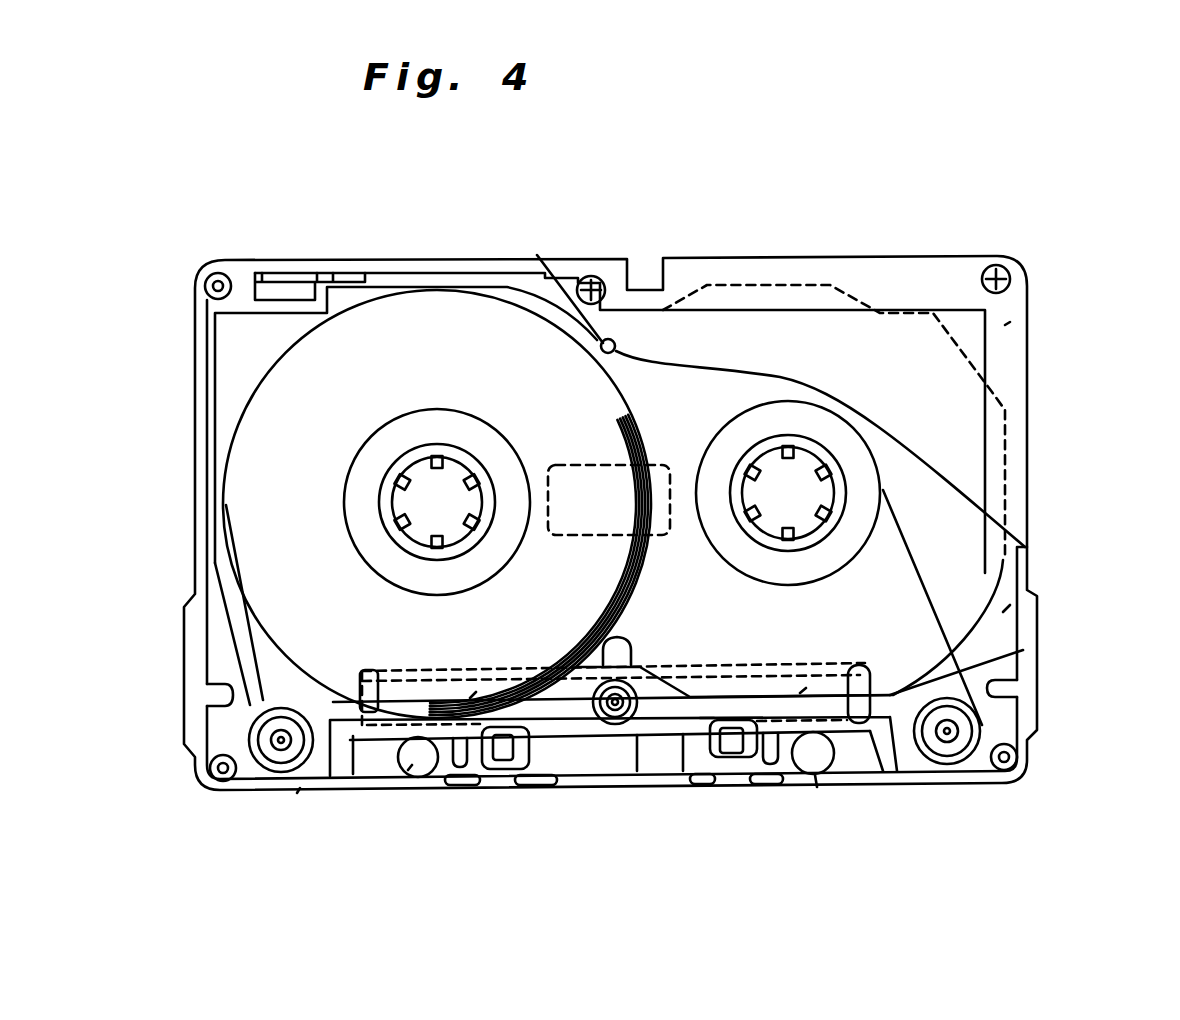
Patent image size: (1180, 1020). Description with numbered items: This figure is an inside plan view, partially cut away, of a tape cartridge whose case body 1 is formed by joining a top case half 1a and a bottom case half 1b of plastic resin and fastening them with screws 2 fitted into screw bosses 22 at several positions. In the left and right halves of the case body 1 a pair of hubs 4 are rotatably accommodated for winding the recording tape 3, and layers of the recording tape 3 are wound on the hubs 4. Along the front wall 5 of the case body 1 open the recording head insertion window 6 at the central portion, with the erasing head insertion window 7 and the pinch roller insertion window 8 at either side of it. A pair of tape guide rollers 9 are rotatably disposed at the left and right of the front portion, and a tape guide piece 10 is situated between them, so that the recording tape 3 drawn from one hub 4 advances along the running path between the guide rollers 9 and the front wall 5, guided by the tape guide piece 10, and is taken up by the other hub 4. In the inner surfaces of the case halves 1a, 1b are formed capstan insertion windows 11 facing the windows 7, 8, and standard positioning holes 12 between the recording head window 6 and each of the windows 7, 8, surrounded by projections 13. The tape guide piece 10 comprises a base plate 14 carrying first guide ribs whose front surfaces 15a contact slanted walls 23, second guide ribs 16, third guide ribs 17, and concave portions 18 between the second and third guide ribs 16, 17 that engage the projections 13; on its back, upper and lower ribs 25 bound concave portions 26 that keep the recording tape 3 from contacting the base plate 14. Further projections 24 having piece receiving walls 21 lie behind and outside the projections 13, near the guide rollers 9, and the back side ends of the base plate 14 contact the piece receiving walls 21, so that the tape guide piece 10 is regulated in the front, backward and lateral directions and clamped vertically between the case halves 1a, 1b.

The case body 1 is at (793, 256).
The top case half 1a is at (1005, 325).
The bottom case half 1b is at (1003, 613).
The screws 2 is at (594, 276).
The recording tape 3 is at (1023, 650).
The hubs 4 is at (470, 427).
The front wall 5 is at (297, 793).
The recording head insertion window 6 is at (603, 777).
The erasing head insertion window 7 is at (432, 782).
The pinch roller insertion window 8 is at (850, 773).
The tape guide rollers 9 is at (270, 760).
The tape guide piece 10 is at (642, 736).
The capstan insertion windows 11 is at (408, 770).
The standard positioning holes 12 is at (533, 787).
The projections 13 is at (540, 640).
The base plate 14 is at (707, 717).
The front surfaces of the first guide ribs 15a is at (350, 772).
The second guide ribs 16 is at (577, 790).
The third guide ribs 17 is at (462, 797).
The concave portions 18 is at (497, 787).
The piece receiving walls 21 is at (394, 710).
The screw bosses 22 is at (223, 276).
The slanted walls 23 is at (336, 704).
The further projections 24 is at (368, 670).
The upper and lower ribs 25 is at (470, 698).
The concave portions 26 is at (413, 730).